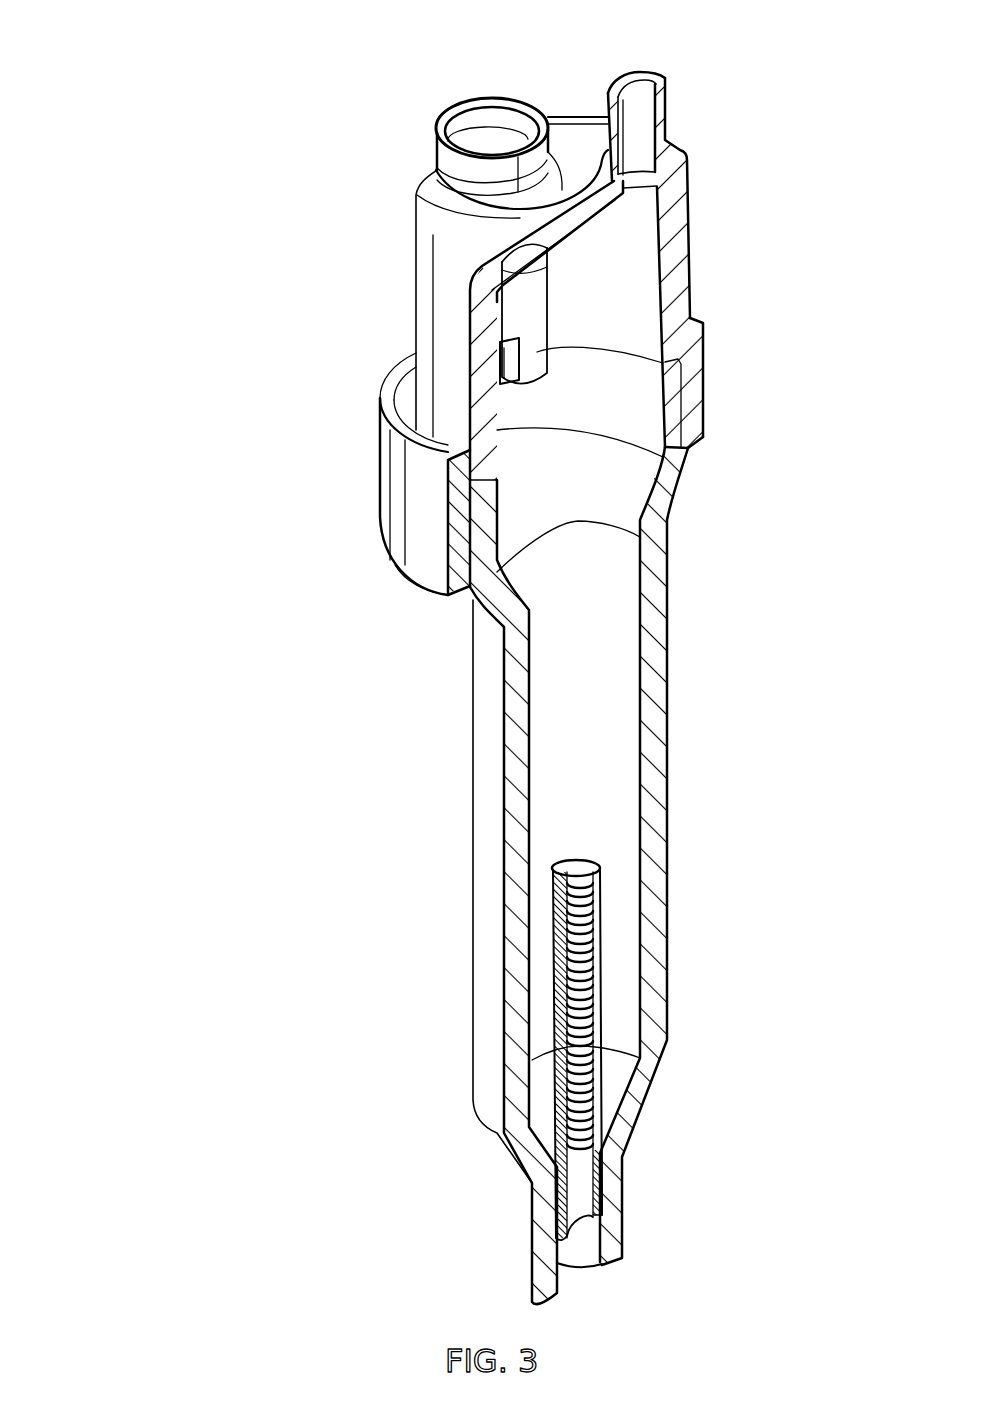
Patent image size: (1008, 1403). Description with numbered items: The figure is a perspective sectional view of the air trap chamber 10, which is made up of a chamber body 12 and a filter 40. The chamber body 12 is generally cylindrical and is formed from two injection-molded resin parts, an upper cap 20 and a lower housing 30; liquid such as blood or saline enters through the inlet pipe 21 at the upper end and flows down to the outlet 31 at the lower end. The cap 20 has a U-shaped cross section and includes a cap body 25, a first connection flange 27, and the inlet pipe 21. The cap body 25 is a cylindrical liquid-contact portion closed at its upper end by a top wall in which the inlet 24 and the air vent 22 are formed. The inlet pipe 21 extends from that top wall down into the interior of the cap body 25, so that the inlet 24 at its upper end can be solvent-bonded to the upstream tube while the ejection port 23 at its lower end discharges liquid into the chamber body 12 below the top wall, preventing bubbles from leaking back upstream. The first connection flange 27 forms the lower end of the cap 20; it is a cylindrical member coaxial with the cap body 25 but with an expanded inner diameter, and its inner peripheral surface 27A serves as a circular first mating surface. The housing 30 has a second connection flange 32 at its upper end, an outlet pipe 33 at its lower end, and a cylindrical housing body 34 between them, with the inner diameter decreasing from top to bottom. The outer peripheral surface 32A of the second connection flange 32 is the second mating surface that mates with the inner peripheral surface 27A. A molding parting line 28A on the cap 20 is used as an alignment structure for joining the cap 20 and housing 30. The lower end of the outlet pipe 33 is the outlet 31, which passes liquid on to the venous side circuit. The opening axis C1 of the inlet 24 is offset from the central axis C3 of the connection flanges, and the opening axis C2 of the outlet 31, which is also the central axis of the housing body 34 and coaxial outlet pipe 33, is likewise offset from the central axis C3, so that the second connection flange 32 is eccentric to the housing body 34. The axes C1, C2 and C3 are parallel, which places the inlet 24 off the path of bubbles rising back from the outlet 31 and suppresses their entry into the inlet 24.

The air trap chamber 10 is at (130, 357).
The chamber body 12 is at (783, 463).
The cap 20 is at (706, 409).
The inlet pipe 21 is at (528, 330).
The air vent 22 is at (632, 84).
The ejection port 23 is at (500, 360).
The inlet 24 is at (448, 117).
The cap body 25 is at (690, 262).
The first connection flange 27 is at (703, 373).
The inner peripheral surface 27A is at (672, 396).
The parting line 28A is at (480, 215).
The housing 30 is at (667, 622).
The outlet 31 is at (601, 1270).
The second connection flange 32 is at (478, 519).
The outer peripheral surface 32A is at (437, 548).
The outlet pipe 33 is at (613, 1202).
The housing body 34 is at (650, 784).
The filter 40 is at (601, 873).
The opening axis of the inlet C1 is at (491, 118).
The opening axis of the outlet C2 is at (577, 868).
The central axis of the connection flanges C3 is at (572, 470).